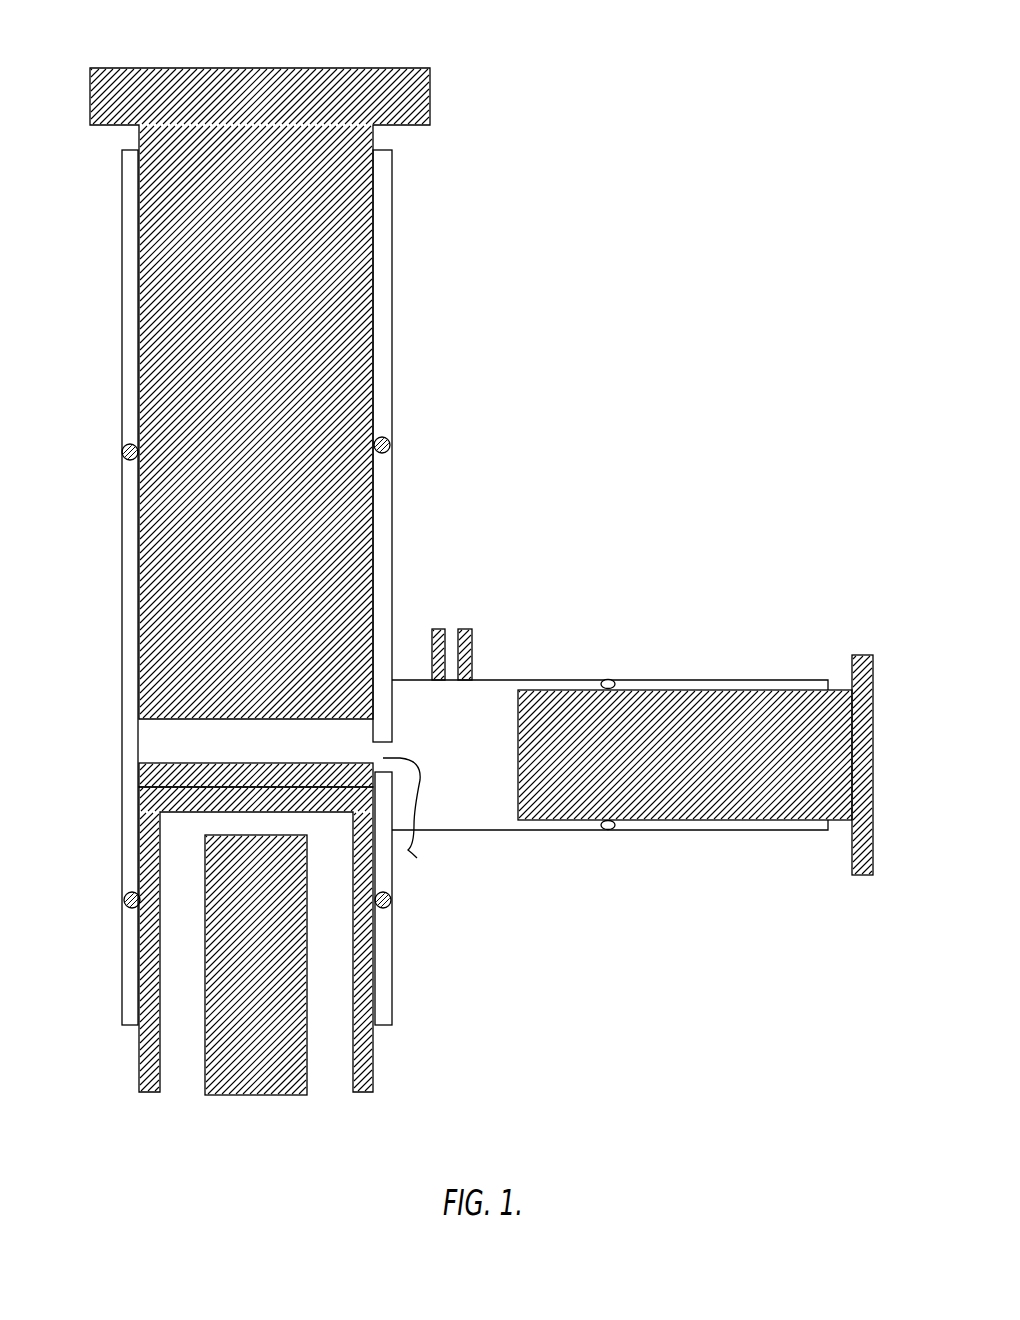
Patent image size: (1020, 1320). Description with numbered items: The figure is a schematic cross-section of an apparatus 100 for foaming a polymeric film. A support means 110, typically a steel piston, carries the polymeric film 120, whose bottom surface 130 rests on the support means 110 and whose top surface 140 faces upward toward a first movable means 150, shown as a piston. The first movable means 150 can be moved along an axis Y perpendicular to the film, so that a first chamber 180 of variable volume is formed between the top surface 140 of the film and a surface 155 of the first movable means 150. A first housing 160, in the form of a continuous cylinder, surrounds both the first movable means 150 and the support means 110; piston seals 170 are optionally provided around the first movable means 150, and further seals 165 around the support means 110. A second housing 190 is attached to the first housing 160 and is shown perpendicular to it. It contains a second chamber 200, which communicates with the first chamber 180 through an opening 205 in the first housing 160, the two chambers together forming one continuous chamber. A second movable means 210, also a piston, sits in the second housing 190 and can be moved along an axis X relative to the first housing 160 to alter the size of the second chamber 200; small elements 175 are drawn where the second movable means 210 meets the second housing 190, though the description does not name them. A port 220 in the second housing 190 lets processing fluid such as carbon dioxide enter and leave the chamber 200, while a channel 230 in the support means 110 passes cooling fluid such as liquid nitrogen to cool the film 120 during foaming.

The apparatus 100 is at (648, 336).
The support means 110 is at (206, 956).
The polymeric film 120 is at (317, 772).
The bottom surface 130 is at (158, 793).
The top surface 140 is at (153, 762).
The first movable means 150 is at (350, 338).
The surface 155 is at (145, 722).
The first housing 160 is at (390, 252).
The seals 165 is at (390, 906).
The piston seals 170 is at (388, 436).
The bearings 175 is at (610, 823).
The first chamber 180 is at (148, 738).
The second housing 190 is at (490, 830).
The second chamber 200 is at (492, 707).
The opening 205 is at (412, 824).
The second movable means 210 is at (720, 769).
The port 220 is at (452, 627).
The channel 230 is at (332, 1038).
The axis X is at (865, 767).
The axis Y is at (290, 83).